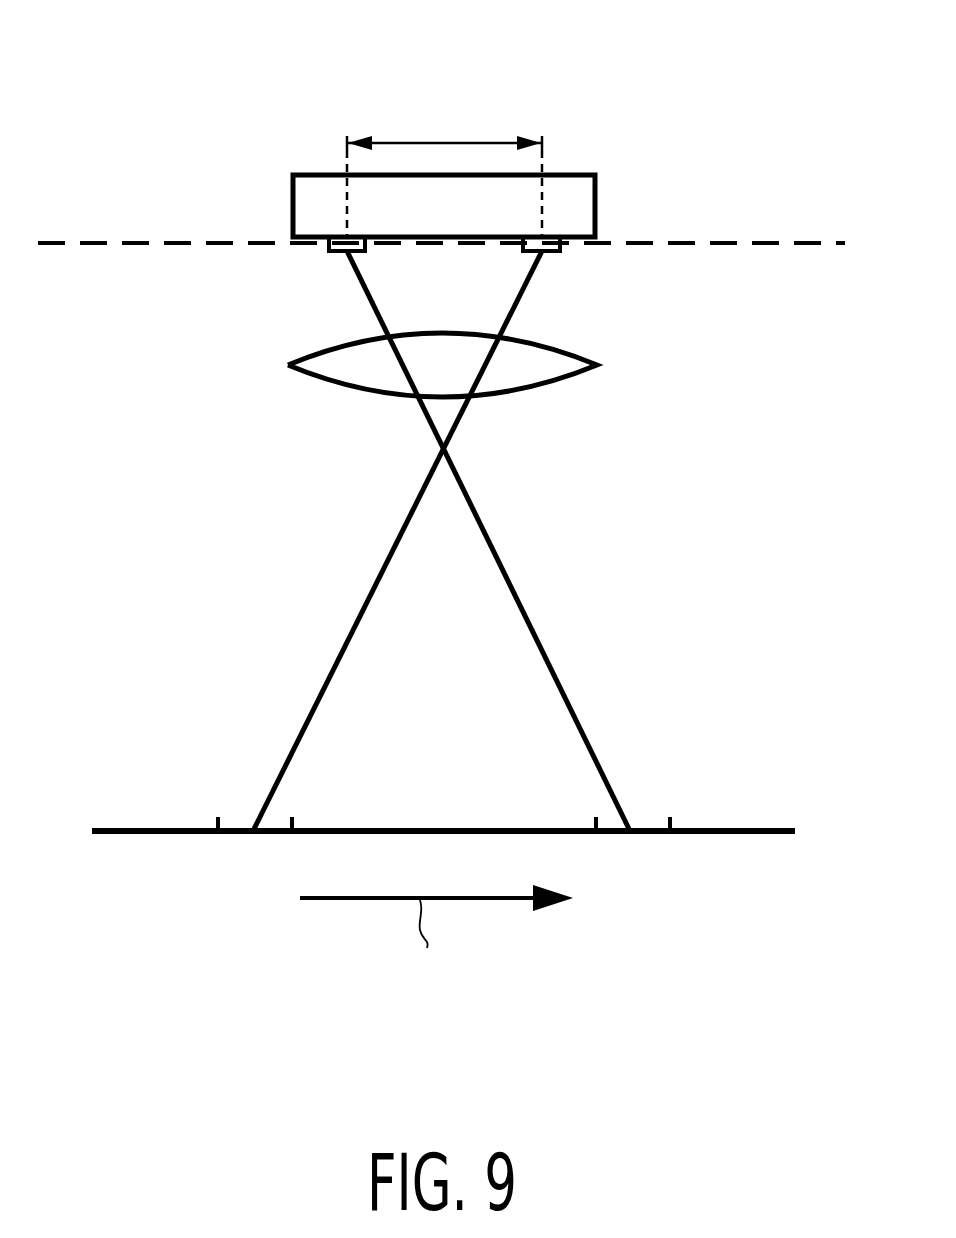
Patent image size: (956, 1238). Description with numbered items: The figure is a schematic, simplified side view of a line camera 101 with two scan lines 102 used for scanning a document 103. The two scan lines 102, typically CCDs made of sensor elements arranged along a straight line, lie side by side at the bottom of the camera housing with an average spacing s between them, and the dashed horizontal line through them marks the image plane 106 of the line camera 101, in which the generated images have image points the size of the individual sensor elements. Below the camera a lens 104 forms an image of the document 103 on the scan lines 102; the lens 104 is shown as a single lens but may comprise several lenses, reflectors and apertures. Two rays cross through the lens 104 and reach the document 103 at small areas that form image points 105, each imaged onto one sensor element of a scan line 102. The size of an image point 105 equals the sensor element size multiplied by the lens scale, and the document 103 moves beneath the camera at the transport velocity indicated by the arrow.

The line camera 101 is at (626, 90).
The scan lines 102 is at (332, 236).
The document 103 is at (777, 833).
The lens 104 is at (575, 347).
The image points 105 is at (236, 833).
The image plane 106 is at (805, 243).